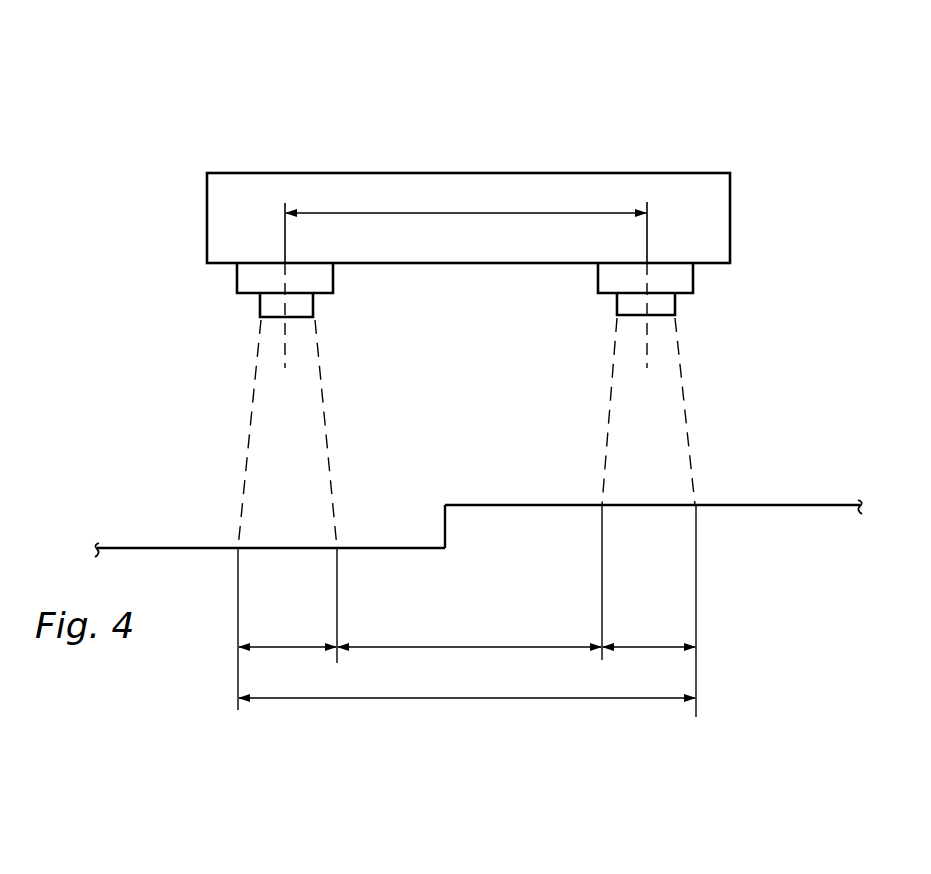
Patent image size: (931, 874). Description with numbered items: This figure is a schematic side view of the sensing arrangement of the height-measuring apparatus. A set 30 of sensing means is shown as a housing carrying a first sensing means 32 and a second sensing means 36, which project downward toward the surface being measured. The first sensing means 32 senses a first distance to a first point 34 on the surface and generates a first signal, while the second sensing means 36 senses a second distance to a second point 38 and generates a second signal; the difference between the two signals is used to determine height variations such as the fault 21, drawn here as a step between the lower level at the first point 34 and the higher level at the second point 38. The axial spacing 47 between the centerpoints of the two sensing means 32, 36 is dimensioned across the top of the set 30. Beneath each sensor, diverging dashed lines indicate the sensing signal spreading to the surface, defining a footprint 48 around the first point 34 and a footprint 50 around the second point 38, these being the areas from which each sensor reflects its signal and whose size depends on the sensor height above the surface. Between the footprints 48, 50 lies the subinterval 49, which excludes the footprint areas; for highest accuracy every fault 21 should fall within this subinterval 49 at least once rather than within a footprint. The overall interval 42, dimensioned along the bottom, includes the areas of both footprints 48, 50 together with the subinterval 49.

The set of sensing means 30 is at (736, 208).
The first sensing means 32 is at (262, 278).
The second sensing means 36 is at (693, 282).
The axial spacing 47 is at (465, 213).
The first point 34 is at (293, 548).
The fault 21 is at (445, 532).
The second point 38 is at (655, 505).
The footprint 48 is at (302, 644).
The subinterval 49 is at (507, 644).
The footprint 50 is at (662, 644).
The interval 42 is at (442, 699).